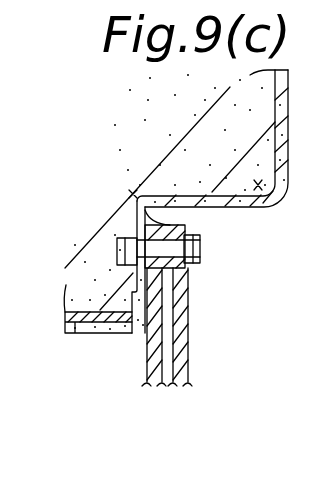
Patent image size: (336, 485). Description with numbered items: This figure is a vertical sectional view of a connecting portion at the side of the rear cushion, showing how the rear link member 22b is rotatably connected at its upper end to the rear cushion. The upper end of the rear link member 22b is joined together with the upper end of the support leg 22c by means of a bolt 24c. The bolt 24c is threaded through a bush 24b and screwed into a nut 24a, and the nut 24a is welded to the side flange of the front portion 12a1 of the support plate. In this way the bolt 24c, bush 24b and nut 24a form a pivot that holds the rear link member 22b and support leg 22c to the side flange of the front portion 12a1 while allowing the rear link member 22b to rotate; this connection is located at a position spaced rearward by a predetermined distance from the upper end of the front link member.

The bush 24b is at (174, 211).
The nut 24a is at (123, 234).
The bolt 24c is at (195, 236).
The support leg 22c is at (181, 311).
The rear link member 22b is at (154, 370).
The front portion of support plate 12a1 is at (78, 334).